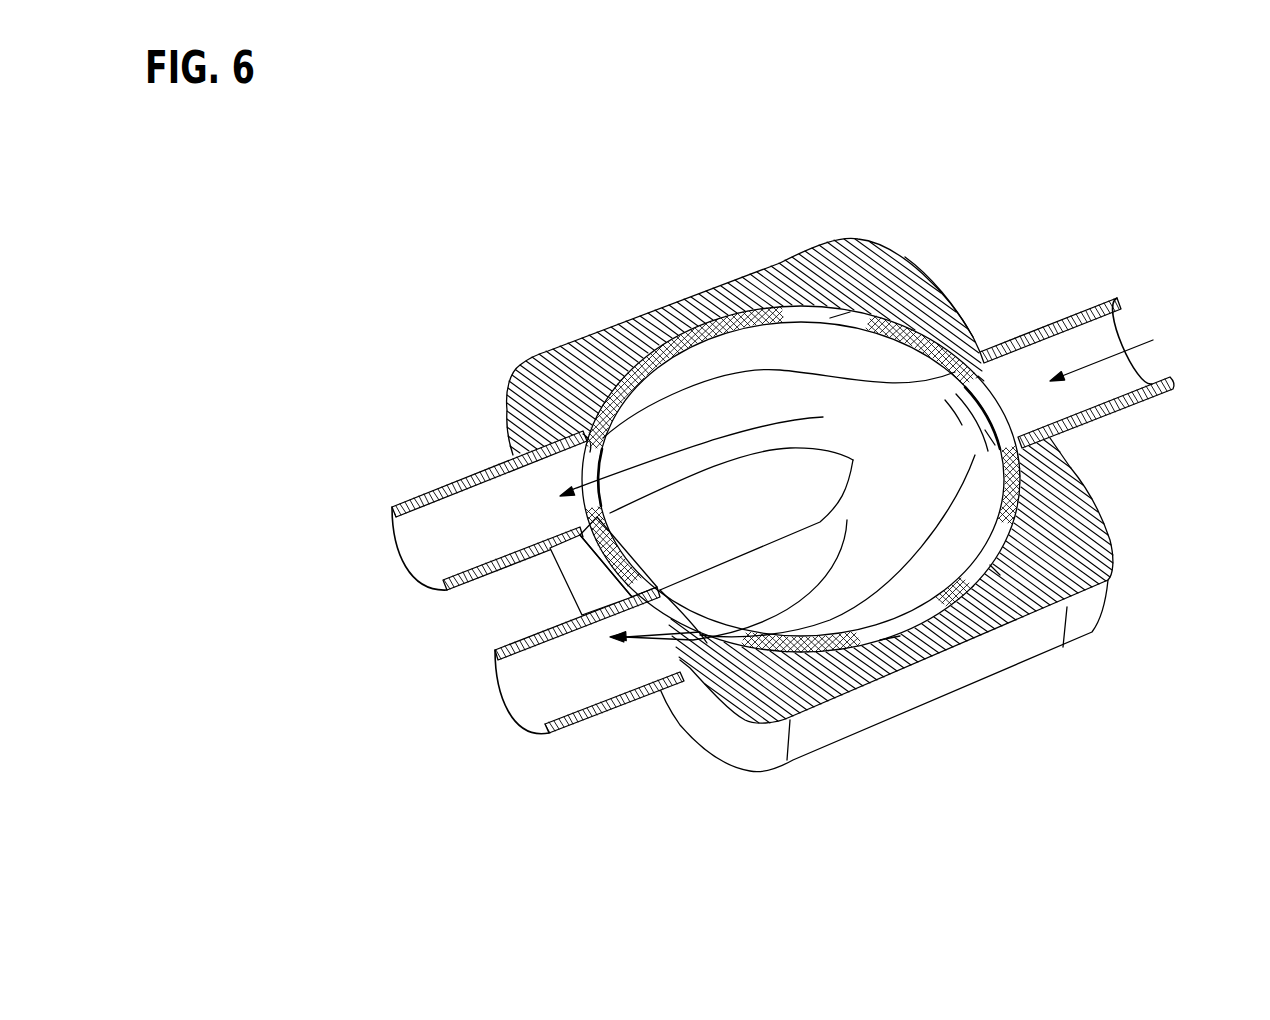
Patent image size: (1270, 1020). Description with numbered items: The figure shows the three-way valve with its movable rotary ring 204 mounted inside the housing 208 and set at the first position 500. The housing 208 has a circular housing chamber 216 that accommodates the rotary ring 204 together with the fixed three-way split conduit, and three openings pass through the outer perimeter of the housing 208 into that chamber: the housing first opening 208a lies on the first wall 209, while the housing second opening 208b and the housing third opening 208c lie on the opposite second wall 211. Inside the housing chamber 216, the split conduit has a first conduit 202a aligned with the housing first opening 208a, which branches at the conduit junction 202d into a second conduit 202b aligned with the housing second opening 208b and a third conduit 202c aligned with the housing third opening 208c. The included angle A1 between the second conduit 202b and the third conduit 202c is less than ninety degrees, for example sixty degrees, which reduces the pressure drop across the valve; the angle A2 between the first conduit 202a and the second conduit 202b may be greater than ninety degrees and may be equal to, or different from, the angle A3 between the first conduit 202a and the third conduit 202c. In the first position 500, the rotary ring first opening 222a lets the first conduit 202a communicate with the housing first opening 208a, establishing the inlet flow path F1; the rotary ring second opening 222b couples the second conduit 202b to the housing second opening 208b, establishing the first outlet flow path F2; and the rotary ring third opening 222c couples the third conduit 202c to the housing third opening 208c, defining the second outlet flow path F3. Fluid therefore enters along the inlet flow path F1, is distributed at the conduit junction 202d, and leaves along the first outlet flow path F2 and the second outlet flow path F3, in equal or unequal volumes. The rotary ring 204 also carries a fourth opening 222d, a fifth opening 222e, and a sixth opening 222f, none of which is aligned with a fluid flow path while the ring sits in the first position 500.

The first position 500 is at (350, 183).
The rotary ring 204 is at (690, 320).
The housing 208 is at (808, 491).
The first wall 209 is at (931, 262).
The first conduit 202a is at (955, 370).
The second conduit 202b is at (707, 427).
The third conduit 202c is at (757, 610).
The conduit junction 202d is at (904, 441).
The housing chamber 216 is at (827, 352).
The housing first opening 208a is at (1116, 373).
The housing second opening 208b is at (430, 560).
The housing third opening 208c is at (527, 697).
The second wall 211 is at (562, 588).
The rotary ring first opening 222a is at (990, 437).
The rotary ring second opening 222b is at (583, 434).
The rotary ring third opening 222c is at (707, 643).
The rotary ring fourth opening 222d is at (840, 315).
The rotary ring fifth opening 222e is at (890, 637).
The rotary ring sixth opening 222f is at (995, 570).
The inlet flow path F1 is at (1101, 360).
The first outlet flow path F2 is at (704, 451).
The second outlet flow path F3 is at (738, 574).
The angle between second conduit and third conduit A1 is at (756, 525).
The angle between first conduit and second conduit A2 is at (902, 378).
The angle between first conduit and third conduit A3 is at (965, 489).